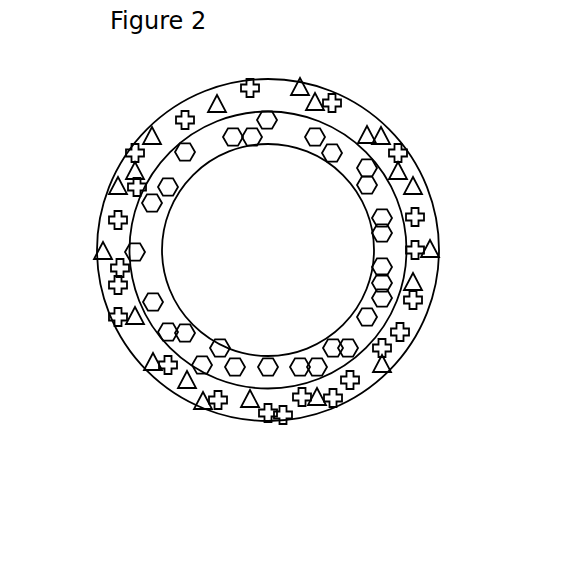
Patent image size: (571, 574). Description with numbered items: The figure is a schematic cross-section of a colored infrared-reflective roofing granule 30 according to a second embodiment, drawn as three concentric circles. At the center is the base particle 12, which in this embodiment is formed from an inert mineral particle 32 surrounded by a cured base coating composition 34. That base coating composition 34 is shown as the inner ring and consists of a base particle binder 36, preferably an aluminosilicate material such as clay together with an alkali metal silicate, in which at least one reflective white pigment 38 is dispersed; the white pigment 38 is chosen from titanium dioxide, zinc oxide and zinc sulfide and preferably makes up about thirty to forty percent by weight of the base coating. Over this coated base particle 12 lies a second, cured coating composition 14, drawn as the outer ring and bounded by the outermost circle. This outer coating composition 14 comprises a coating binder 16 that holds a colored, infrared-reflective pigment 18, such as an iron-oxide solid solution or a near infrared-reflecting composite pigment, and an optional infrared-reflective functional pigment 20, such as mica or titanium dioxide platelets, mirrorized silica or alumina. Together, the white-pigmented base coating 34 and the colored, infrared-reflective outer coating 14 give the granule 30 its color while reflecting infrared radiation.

The base particle 12 is at (243, 282).
The cured coating composition 14 is at (108, 195).
The coating binder 16 is at (110, 245).
The colored, infrared-reflective pigment 18 is at (145, 358).
The infrared-reflective functional pigment 20 is at (210, 403).
The colored infrared-reflective roofing granule 30 is at (127, 128).
The mineral particle 32 is at (325, 308).
The cured base coating composition 34 is at (327, 357).
The base particle binder 36 is at (357, 162).
The reflective white pigment 38 is at (392, 227).